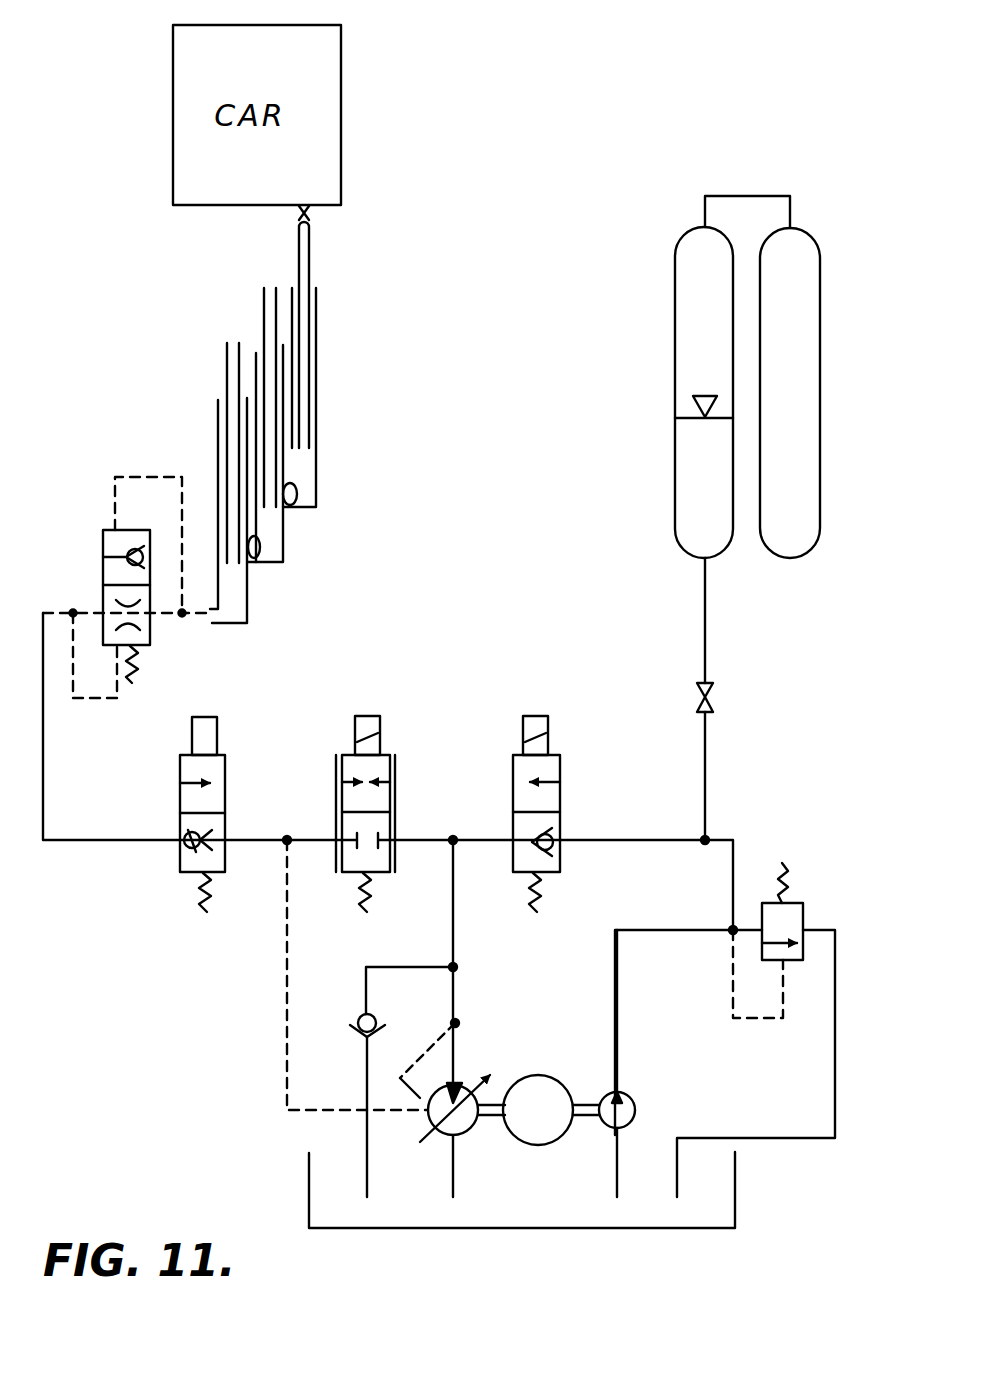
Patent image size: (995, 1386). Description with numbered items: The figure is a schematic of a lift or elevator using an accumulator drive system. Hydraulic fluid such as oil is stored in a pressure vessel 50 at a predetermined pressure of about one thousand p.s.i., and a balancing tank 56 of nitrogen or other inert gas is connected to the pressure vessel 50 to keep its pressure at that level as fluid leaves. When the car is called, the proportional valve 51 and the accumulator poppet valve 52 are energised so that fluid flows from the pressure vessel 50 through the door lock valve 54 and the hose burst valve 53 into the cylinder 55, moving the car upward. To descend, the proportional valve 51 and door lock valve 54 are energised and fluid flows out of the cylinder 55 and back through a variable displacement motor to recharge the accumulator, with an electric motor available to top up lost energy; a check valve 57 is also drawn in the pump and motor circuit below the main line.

The pressure vessel 50 is at (668, 290).
The balancing tank 56 is at (830, 333).
The cylinder 55 is at (323, 442).
The hose burst valve 53 is at (95, 548).
The door lock valve 54 is at (225, 745).
The proportional valve 51 is at (392, 750).
The accumulator poppet valve 52 is at (562, 753).
The check valve 57 is at (350, 1037).